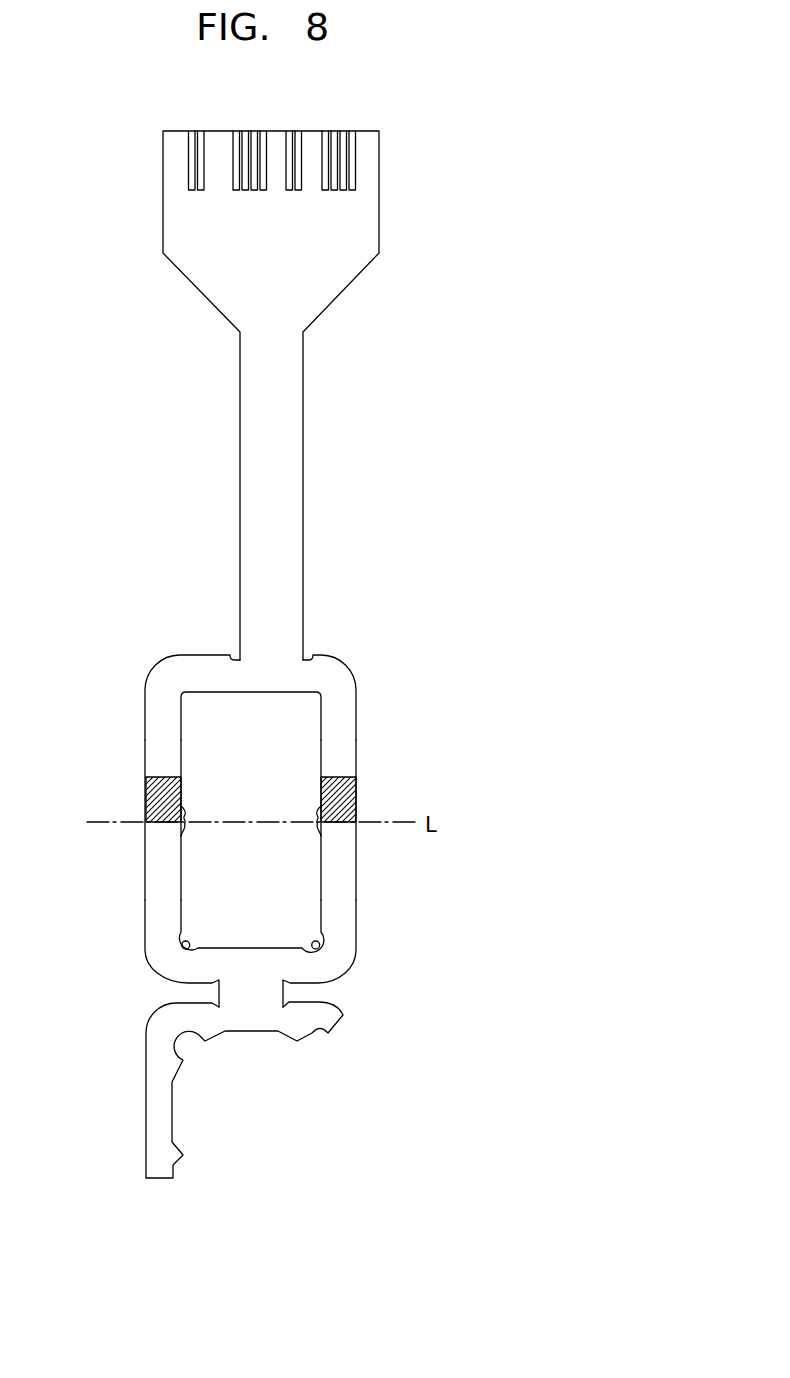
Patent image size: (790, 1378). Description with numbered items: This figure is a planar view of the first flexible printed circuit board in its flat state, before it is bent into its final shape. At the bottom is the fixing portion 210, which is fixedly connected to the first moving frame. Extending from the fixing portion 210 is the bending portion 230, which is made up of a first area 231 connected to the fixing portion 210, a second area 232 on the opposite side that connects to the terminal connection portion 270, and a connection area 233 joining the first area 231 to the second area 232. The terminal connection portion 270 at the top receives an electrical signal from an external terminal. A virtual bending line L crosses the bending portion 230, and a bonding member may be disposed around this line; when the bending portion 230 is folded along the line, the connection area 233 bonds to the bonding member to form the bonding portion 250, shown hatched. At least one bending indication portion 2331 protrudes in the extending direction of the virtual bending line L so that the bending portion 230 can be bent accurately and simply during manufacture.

The terminal connection portion 270 is at (353, 234).
The bending portion 230 is at (278, 831).
The second area 232 is at (157, 701).
The connection area 233 is at (153, 834).
The first area 231 is at (157, 918).
The bonding portion 250 is at (346, 797).
The bending indication portion 2331 is at (185, 814).
The fixing portion 210 is at (162, 1112).